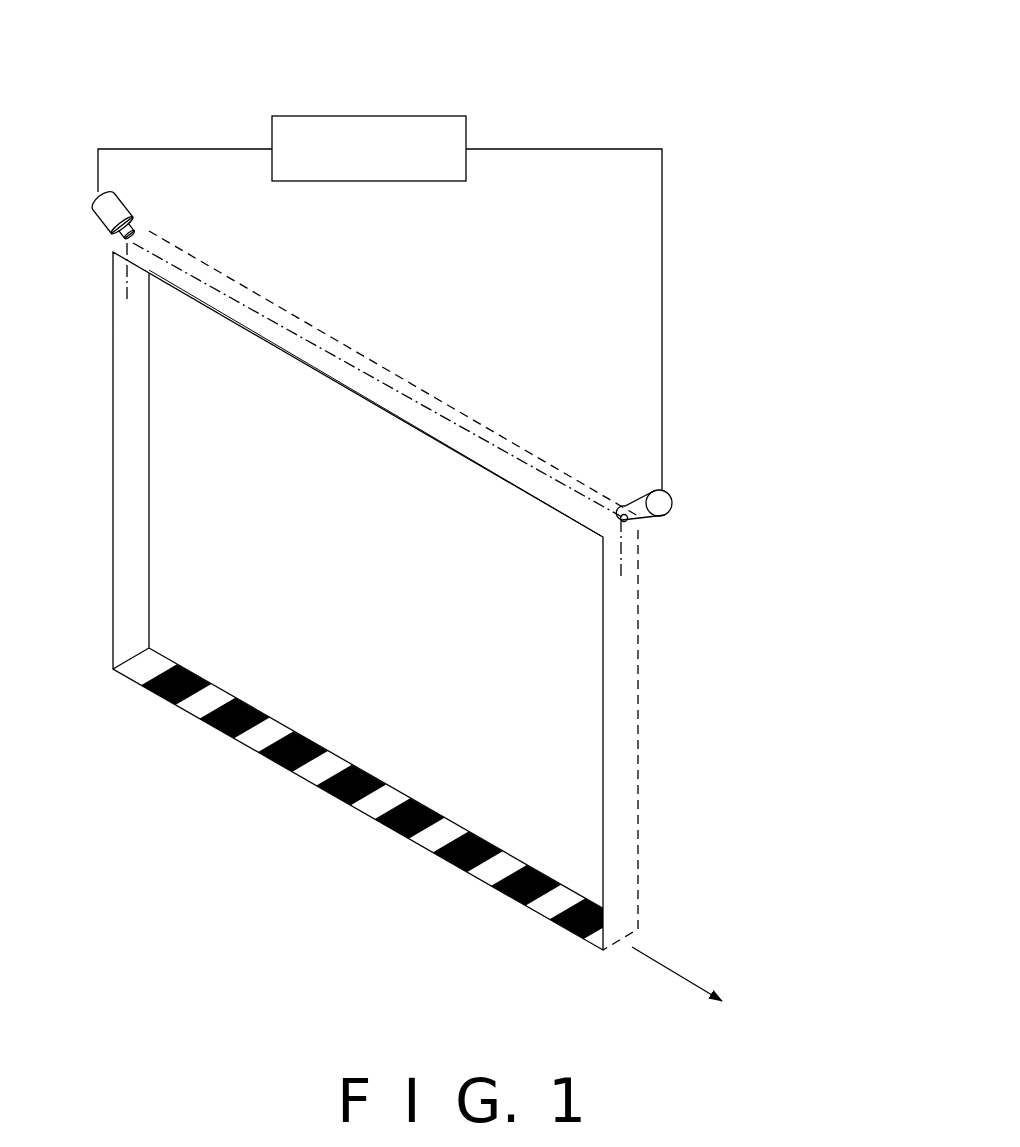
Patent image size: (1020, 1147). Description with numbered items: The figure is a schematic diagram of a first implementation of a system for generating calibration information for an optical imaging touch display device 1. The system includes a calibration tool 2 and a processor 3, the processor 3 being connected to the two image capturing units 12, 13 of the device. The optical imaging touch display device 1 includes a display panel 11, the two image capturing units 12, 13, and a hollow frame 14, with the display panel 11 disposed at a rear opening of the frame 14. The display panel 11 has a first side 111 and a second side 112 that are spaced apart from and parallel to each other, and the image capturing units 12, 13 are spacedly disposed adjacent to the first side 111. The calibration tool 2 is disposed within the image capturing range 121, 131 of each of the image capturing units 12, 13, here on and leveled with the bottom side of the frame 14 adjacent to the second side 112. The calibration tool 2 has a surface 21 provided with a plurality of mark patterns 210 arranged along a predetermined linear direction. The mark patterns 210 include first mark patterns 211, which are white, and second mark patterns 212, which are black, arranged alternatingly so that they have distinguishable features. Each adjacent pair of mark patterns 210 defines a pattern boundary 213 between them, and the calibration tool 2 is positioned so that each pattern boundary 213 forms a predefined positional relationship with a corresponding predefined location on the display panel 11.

The optical imaging touch display device 1 is at (442, 600).
The display panel 11 is at (178, 440).
The first side 111 is at (400, 374).
The second side 112 is at (170, 655).
The image capturing unit 12 is at (672, 500).
The image capturing range 121 is at (567, 497).
The image capturing unit 13 is at (105, 212).
The image capturing range 131 is at (182, 265).
The hollow frame 14 is at (140, 558).
The calibration tool 2 is at (329, 828).
The surface 21 is at (329, 828).
The mark patterns 210 is at (329, 809).
The first mark pattern 211 is at (438, 824).
The second mark pattern 212 is at (380, 802).
The pattern boundary 213 is at (267, 712).
The processor 3 is at (364, 116).